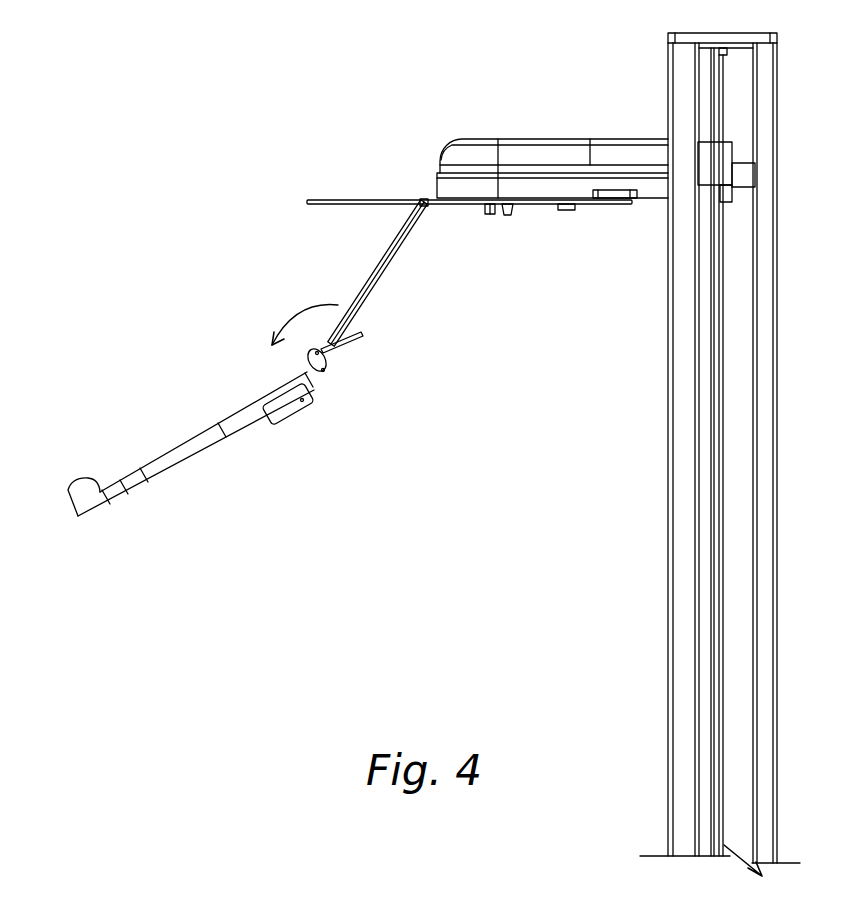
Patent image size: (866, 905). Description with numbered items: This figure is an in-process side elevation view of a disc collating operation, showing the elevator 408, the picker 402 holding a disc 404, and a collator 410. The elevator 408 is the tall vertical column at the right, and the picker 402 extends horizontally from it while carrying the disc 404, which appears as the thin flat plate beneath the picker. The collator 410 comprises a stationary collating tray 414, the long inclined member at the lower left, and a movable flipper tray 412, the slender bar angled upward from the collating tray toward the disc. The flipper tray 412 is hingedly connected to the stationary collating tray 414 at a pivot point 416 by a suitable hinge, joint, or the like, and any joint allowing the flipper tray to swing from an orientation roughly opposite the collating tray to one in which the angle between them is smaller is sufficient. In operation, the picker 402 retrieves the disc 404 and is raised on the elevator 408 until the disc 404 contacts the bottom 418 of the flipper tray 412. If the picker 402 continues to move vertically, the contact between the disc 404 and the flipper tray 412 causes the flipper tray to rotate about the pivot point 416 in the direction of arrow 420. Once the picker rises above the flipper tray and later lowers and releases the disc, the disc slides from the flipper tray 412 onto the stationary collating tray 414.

The picker 402 is at (532, 139).
The disc 404 is at (330, 199).
The elevator 408 is at (777, 82).
The collator 410 is at (222, 343).
The flipper tray 412 is at (383, 283).
The stationary collating tray 414 is at (175, 442).
The pivot point 416 is at (325, 370).
The bottom of flipper tray 418 is at (418, 225).
The arrow 420 is at (292, 317).